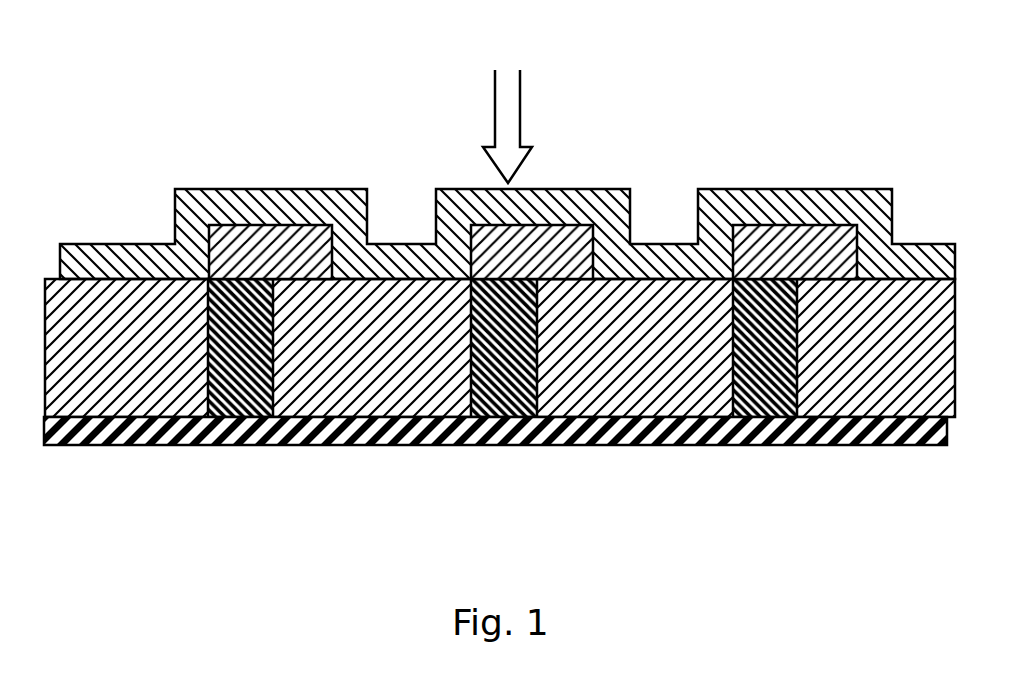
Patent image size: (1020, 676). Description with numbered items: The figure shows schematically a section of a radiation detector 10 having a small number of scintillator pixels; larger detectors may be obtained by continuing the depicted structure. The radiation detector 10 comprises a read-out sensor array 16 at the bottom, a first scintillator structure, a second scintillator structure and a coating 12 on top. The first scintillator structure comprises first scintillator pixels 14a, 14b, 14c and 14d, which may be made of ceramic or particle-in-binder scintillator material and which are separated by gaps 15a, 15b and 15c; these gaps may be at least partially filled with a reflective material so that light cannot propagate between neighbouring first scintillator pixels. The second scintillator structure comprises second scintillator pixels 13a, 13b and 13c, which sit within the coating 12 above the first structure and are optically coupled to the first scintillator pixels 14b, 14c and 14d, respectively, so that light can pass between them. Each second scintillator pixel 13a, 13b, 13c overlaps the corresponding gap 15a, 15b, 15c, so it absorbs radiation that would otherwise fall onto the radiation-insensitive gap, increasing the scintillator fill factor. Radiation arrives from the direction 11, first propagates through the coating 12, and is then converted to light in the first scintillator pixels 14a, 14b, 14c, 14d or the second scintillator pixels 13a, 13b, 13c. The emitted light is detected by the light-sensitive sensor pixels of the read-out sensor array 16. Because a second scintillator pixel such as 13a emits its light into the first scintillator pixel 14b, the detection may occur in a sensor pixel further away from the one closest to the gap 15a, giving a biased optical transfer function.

The radiation detector 10 is at (118, 168).
The direction 11 is at (523, 107).
The coating 12 is at (197, 207).
The second scintillator pixel 13a is at (257, 248).
The second scintillator pixel 13b is at (555, 248).
The second scintillator pixel 13c is at (790, 245).
The first scintillator pixel 14a is at (123, 370).
The first scintillator pixel 14b is at (390, 370).
The first scintillator pixel 14c is at (660, 372).
The first scintillator pixel 14d is at (890, 372).
The gap 15a is at (260, 395).
The gap 15b is at (516, 392).
The gap 15c is at (770, 392).
The read-out sensor array 16 is at (162, 425).